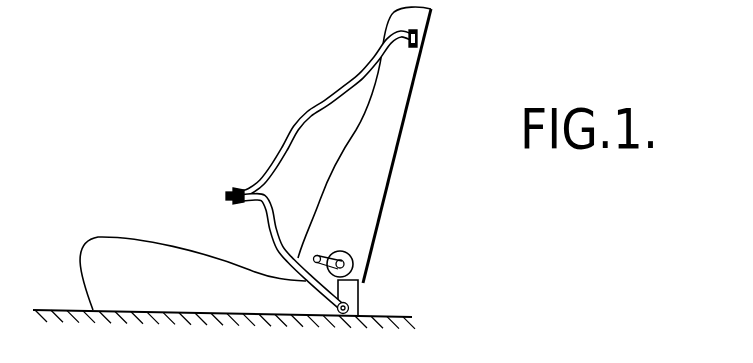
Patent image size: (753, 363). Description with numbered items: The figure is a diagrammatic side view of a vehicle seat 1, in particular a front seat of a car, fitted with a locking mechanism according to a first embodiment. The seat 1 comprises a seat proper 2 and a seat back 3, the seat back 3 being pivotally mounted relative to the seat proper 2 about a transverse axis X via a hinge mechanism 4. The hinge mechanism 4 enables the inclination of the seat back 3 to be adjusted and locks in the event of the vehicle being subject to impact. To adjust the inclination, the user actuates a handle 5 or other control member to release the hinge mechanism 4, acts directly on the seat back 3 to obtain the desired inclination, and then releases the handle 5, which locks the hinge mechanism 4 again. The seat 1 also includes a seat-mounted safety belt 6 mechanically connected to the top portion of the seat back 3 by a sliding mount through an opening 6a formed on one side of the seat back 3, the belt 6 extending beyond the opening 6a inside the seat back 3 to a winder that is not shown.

The vehicle seat 1 is at (258, 159).
The seat proper 2 is at (127, 258).
The seat back 3 is at (383, 119).
The hinge mechanism 4 is at (353, 262).
The handle 5 is at (321, 257).
The seat-mounted safety belt 6 is at (337, 97).
The opening 6a is at (418, 37).
The transverse axis X is at (355, 272).